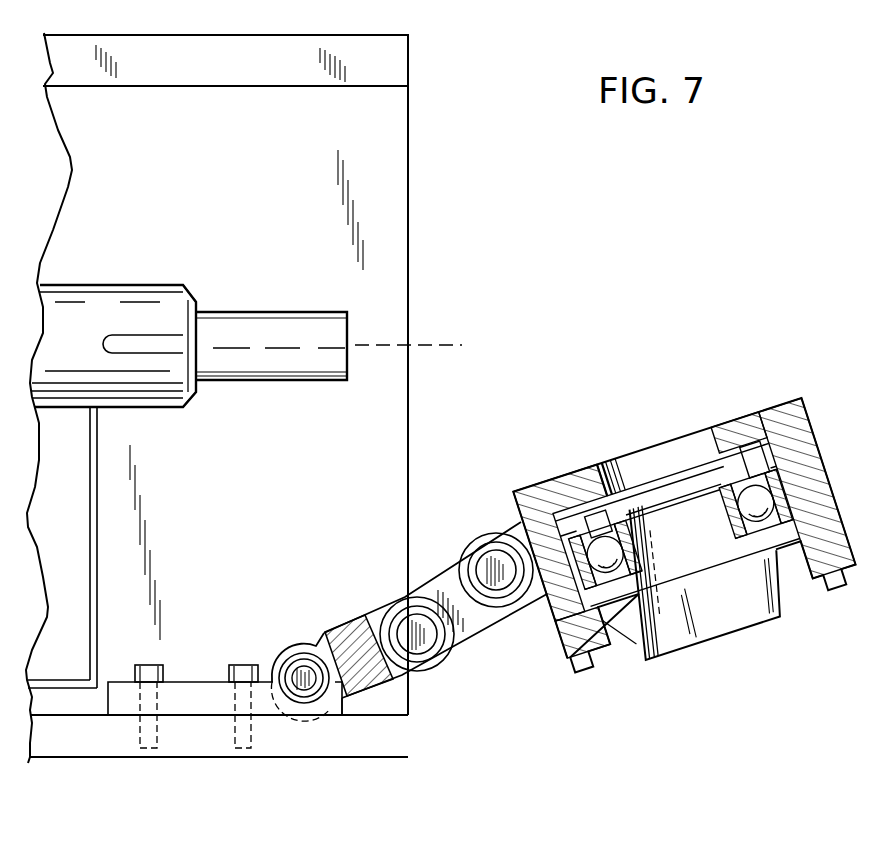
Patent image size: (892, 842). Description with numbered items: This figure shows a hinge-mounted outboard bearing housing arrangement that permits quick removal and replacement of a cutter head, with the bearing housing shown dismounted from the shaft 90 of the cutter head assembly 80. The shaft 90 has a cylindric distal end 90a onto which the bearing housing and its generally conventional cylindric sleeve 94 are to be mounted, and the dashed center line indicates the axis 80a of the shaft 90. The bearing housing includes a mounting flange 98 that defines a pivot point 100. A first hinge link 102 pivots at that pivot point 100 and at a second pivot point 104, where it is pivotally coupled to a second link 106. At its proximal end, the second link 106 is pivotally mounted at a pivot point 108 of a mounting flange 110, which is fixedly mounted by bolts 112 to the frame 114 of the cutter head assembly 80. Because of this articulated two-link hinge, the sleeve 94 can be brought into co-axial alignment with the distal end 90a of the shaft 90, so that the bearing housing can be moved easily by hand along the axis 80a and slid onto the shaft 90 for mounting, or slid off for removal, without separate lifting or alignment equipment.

The cutter head assembly 80 is at (478, 188).
The axis of shaft 80a is at (433, 345).
The shaft 90 is at (130, 282).
The distal end of shaft 90a is at (297, 312).
The sleeve 94 is at (698, 588).
The mounting flange 98 is at (512, 497).
The pivot point 100 is at (503, 575).
The first hinge link 102 is at (458, 632).
The pivot point 104 is at (412, 635).
The second link 106 is at (316, 652).
The pivot point 108 is at (309, 683).
The mounting flange 110 is at (193, 697).
The bolts 112 is at (235, 727).
The frame 114 is at (412, 738).